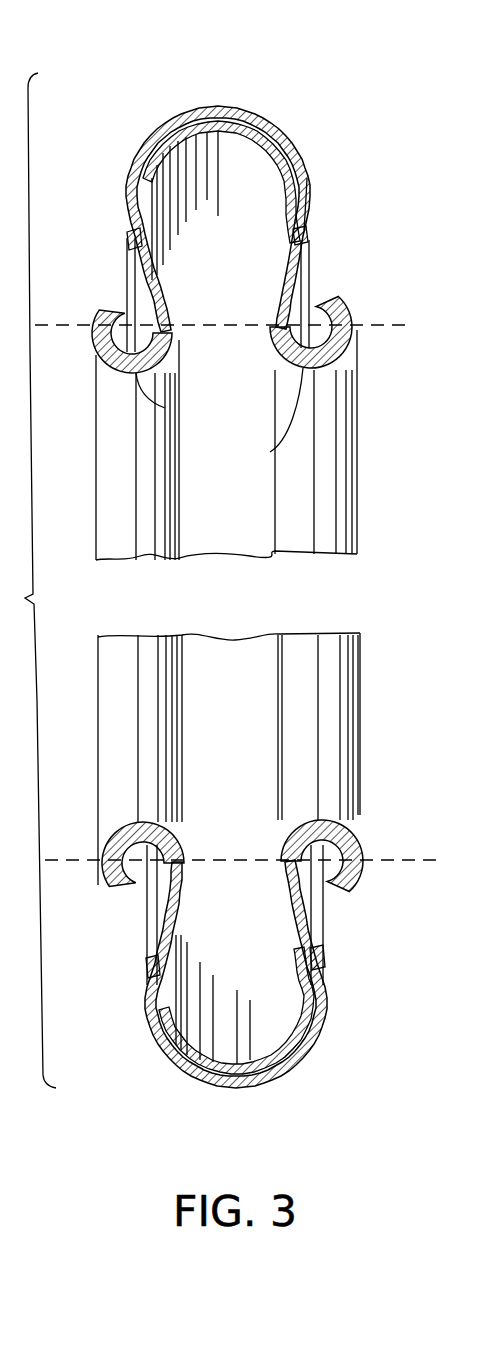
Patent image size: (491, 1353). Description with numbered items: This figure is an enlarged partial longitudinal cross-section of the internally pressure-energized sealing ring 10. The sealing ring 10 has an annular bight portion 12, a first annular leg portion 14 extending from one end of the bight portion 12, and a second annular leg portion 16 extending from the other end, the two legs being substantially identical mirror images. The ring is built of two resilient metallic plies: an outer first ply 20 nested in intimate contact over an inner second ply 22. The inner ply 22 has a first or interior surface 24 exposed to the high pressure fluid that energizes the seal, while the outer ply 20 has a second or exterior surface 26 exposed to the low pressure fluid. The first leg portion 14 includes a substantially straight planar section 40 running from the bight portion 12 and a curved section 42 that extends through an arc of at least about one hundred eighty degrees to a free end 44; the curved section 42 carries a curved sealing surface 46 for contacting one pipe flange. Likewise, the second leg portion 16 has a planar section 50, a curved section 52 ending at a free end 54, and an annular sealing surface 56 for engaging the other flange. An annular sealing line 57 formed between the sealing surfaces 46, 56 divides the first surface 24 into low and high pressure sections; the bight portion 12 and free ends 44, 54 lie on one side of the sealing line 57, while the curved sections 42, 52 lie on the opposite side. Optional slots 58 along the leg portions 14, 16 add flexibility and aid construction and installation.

The sealing ring 10 is at (292, 105).
The bight portion 12 is at (218, 102).
The first leg portion 14 is at (100, 450).
The second leg portion 16 is at (352, 450).
The first ply 20 is at (180, 210).
The second ply 22 is at (150, 132).
The first surface 24 is at (283, 152).
The second surface 26 is at (313, 175).
The planar section 40 is at (166, 292).
The curved section 42 is at (165, 408).
The free end 44 is at (116, 300).
The curved sealing surface 46 is at (94, 328).
The planar section 50 is at (265, 324).
The curved section 52 is at (270, 452).
The free end 54 is at (322, 295).
The annular sealing surface 56 is at (352, 328).
The annular sealing line 57 is at (392, 325).
The slots 58 is at (305, 242).